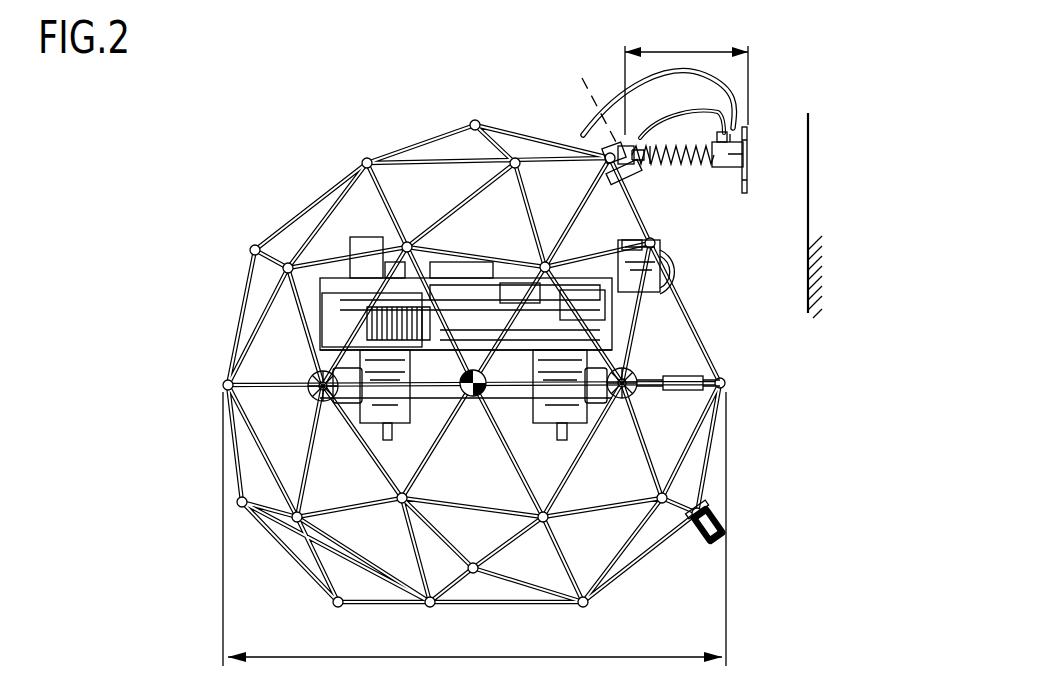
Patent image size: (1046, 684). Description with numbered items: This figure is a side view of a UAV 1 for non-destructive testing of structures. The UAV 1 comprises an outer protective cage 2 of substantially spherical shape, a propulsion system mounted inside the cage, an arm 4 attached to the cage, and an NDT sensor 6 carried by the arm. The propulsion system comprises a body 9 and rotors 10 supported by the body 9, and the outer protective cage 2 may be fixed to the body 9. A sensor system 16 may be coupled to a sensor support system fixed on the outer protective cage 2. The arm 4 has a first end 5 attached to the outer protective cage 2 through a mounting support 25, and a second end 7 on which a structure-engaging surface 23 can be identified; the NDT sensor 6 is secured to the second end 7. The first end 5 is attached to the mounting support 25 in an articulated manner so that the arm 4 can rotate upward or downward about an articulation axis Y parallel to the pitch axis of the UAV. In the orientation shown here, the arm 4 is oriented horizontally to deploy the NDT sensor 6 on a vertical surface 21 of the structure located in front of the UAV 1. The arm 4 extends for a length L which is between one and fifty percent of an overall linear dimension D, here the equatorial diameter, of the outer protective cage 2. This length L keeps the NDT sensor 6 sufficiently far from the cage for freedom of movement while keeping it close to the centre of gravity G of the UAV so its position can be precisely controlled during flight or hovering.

The UAV 1 is at (240, 106).
The outer protective cage 2 is at (264, 216).
The arm 4 is at (764, 72).
The first end 5 is at (638, 180).
The NDT sensor 6 is at (748, 160).
The second end 7 is at (732, 188).
The body 9 is at (340, 318).
The rotors 10 is at (380, 408).
The sensor system 16 is at (690, 278).
The surface 21 is at (810, 164).
The structure-engaging surface 23 is at (748, 182).
The mounting support 25 is at (612, 150).
The centre of gravity G is at (480, 393).
The overall linear dimension D is at (437, 657).
The length L is at (692, 50).
The articulation axis Y is at (591, 94).